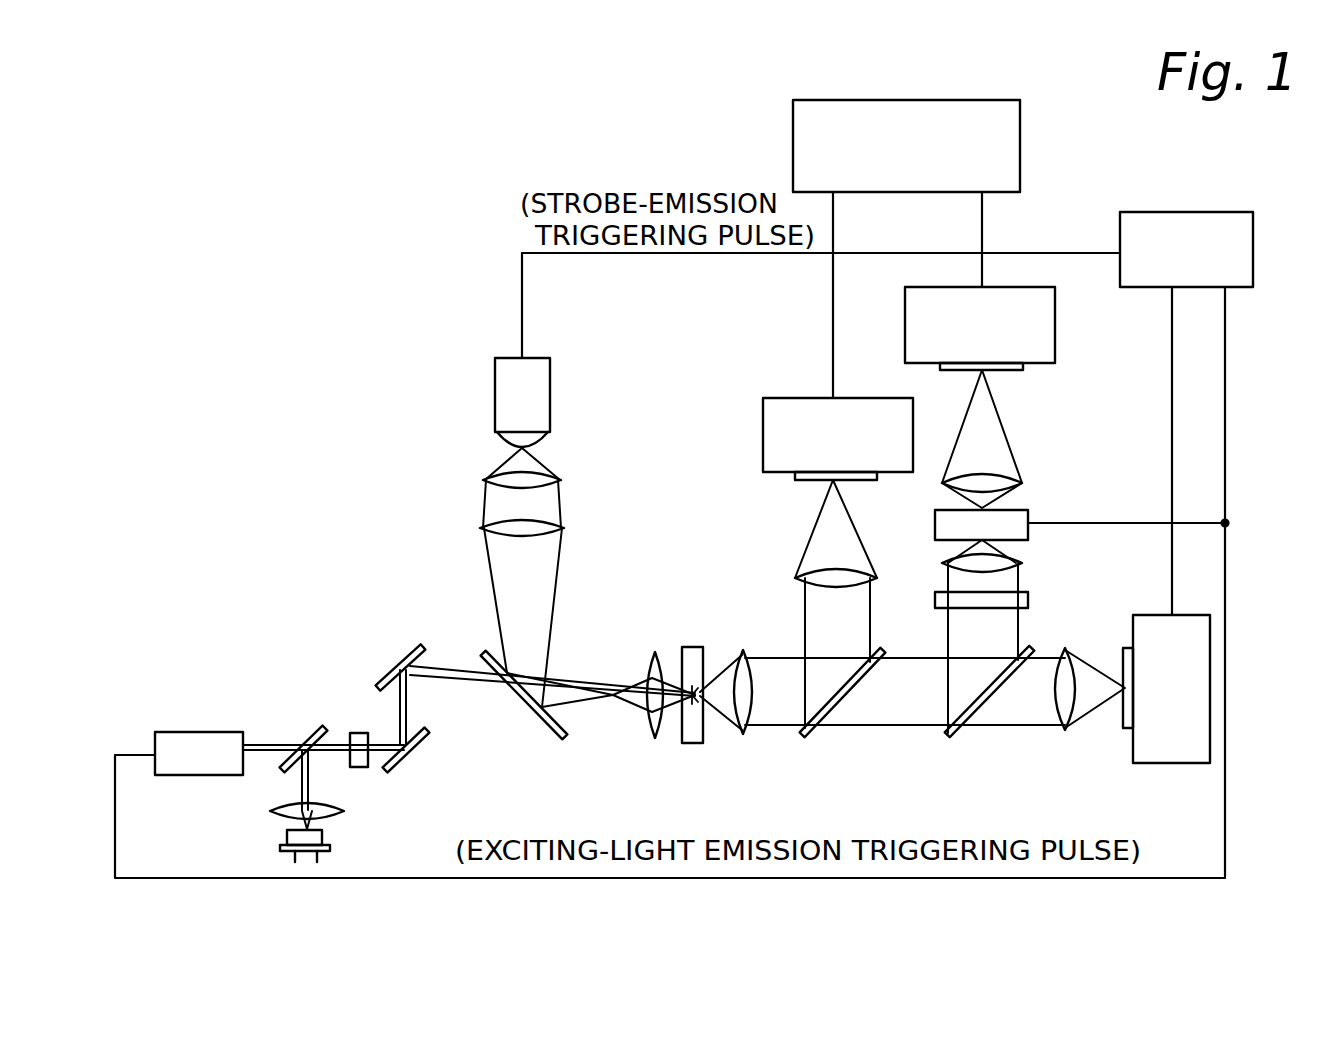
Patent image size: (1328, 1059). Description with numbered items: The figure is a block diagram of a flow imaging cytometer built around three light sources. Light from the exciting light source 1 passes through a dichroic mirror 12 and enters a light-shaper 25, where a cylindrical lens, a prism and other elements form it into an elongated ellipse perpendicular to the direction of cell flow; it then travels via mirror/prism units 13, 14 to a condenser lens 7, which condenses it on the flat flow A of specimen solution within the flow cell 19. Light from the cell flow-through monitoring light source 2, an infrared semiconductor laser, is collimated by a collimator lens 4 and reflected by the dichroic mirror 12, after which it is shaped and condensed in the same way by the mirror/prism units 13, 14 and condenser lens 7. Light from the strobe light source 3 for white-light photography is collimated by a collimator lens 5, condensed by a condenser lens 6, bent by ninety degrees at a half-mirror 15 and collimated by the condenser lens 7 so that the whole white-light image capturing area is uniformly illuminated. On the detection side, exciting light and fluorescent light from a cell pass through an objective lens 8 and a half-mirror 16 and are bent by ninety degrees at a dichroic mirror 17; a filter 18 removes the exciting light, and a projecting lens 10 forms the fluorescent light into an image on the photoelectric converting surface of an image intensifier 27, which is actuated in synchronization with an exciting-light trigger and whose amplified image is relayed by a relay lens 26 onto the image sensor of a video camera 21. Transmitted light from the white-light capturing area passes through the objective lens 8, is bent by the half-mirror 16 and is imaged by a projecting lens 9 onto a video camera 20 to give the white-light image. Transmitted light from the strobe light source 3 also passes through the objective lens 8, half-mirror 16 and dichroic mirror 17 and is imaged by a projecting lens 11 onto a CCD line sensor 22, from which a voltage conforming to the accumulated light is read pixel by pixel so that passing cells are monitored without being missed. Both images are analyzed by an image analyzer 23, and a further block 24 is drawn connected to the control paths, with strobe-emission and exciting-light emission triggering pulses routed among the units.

The exciting light source 1 is at (216, 732).
The light source for monitoring passage of cells 2 is at (286, 860).
The strobe light source 3 is at (495, 388).
The collimator lens 4 is at (273, 810).
The collimator lens 5 is at (484, 480).
The condenser lens 6 is at (481, 528).
The condenser lens 7 is at (657, 740).
The objective lens 8 is at (750, 735).
The projecting lens 9 is at (797, 578).
The projecting lens 10 is at (1022, 563).
The projecting lens 11 is at (1072, 714).
The dichroic mirror 12 is at (305, 738).
The mirror/prism unit 13 is at (422, 746).
The mirror/prism unit 14 is at (404, 660).
The half-mirror 15 is at (540, 715).
The half-mirror 16 is at (840, 705).
The dichroic mirror 17 is at (986, 705).
The filter 18 is at (935, 600).
The flow cell 19 is at (695, 647).
The video camera 20 is at (793, 398).
The video camera 21 is at (905, 320).
The CCD line sensor 22 is at (1142, 615).
The image analyzer 23 is at (1020, 160).
The control unit 24 is at (1132, 212).
The light-shaper 25 is at (360, 733).
The relay lens 26 is at (1022, 483).
The image intensifier 27 is at (935, 525).
The flat flow A is at (658, 685).